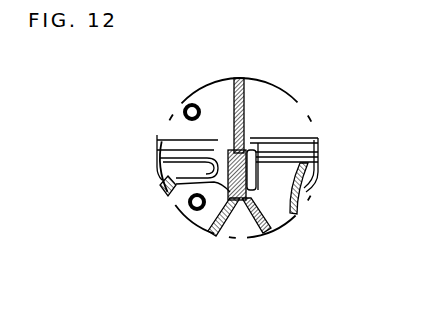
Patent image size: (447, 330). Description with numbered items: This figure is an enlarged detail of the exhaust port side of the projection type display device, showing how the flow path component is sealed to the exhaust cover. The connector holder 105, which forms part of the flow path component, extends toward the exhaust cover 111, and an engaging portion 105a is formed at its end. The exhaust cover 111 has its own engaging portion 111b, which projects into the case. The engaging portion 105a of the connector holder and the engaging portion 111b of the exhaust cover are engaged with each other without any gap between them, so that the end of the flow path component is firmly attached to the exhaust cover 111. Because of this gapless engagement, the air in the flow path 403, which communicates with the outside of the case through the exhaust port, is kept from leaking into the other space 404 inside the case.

The other space 404 is at (223, 106).
The connector holder 105 is at (244, 112).
The engaging portion 105a is at (229, 151).
The engaging portion 111b is at (160, 184).
The exhaust cover 111 is at (213, 239).
The flow path 403 is at (272, 187).